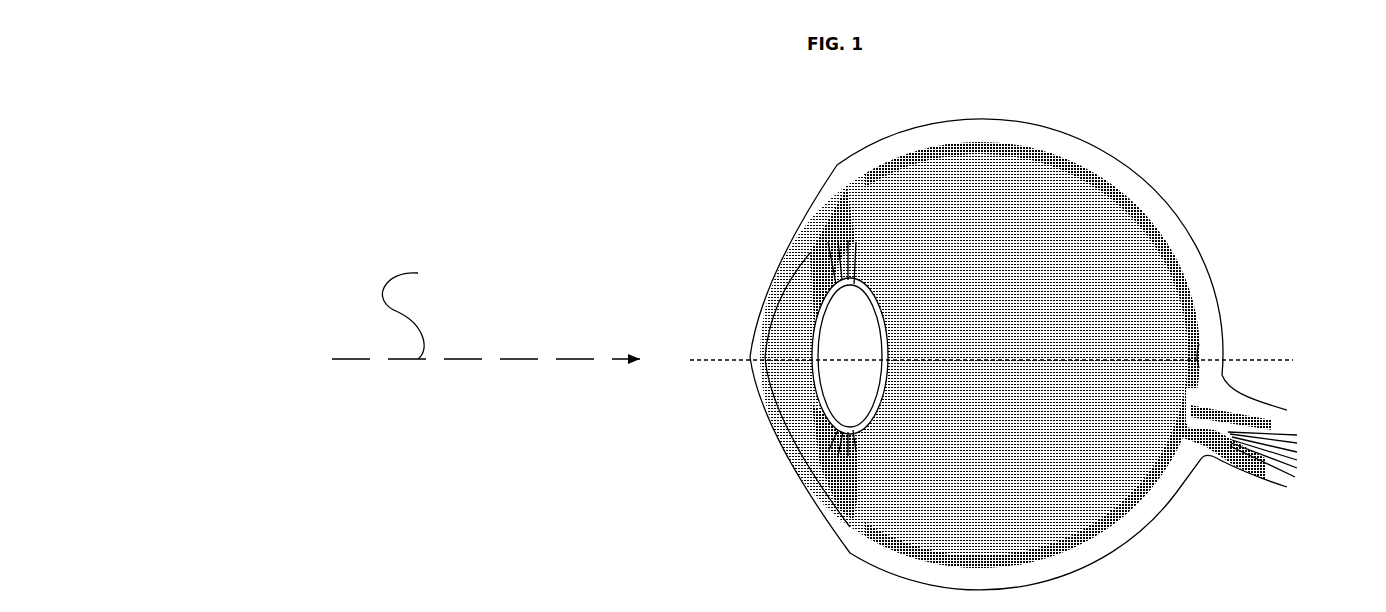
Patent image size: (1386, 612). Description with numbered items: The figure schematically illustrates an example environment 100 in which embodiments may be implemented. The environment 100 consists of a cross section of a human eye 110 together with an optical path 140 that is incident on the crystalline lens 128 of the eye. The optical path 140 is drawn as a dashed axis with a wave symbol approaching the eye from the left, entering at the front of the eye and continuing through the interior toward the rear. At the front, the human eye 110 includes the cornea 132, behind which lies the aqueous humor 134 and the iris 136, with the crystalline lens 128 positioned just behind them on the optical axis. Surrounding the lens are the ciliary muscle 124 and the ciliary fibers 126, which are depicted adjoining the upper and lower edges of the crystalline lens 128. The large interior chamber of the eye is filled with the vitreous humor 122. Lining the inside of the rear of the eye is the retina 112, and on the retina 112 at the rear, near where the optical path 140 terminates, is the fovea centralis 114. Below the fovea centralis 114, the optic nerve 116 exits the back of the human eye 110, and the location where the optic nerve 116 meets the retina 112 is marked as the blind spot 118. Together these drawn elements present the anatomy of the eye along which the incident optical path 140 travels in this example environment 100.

The environment 100 is at (360, 62).
The human eye 110 is at (1010, 341).
The retina 112 is at (1172, 257).
The fovea centralis 114 is at (1203, 350).
The optic nerve 116 is at (1265, 434).
The blind spot 118 is at (1205, 401).
The vitreous humor 122 is at (980, 355).
The ciliary muscle 124 is at (838, 219).
The ciliary fibers 126 is at (840, 258).
The crystalline lens 128 is at (850, 380).
The cornea 132 is at (772, 359).
The aqueous humor 134 is at (788, 370).
The iris 136 is at (797, 415).
The optical path 140 is at (424, 314).